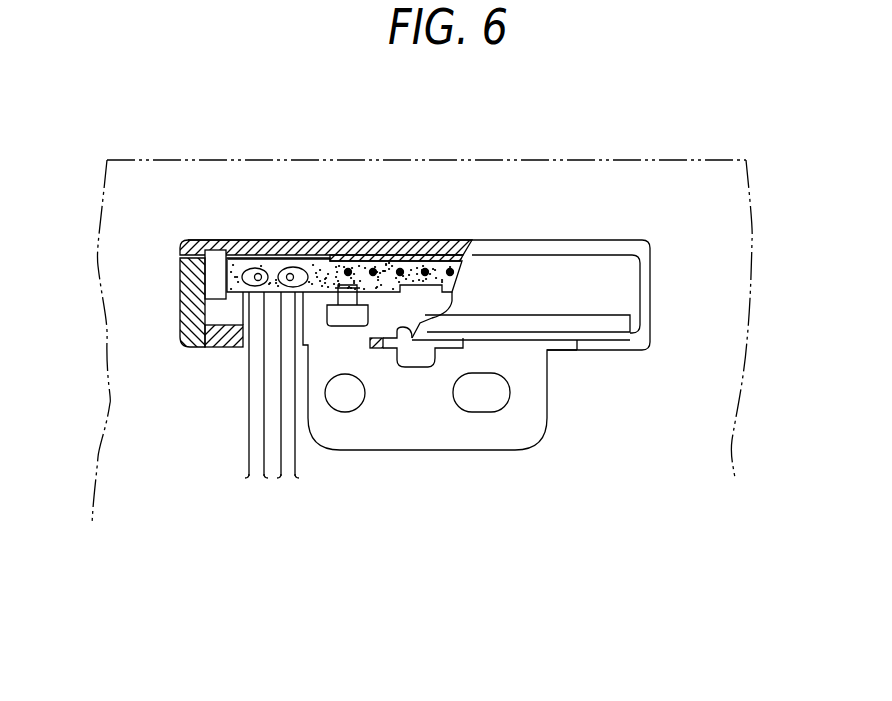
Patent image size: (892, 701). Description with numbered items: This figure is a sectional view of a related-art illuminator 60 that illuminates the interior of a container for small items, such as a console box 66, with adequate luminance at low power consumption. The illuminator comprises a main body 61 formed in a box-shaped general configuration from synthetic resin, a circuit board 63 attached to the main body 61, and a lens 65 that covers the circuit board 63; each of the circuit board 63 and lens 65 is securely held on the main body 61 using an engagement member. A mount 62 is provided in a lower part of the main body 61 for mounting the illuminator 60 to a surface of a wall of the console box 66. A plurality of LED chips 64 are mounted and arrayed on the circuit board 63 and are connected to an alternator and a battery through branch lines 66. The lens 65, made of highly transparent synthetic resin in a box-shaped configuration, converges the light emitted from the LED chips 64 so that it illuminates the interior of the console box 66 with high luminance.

The illuminator 60 is at (645, 237).
The main body 61 is at (193, 347).
The mount 62 is at (528, 406).
The circuit board 63 is at (266, 263).
The LED chips 64 is at (450, 268).
The lens 65 is at (543, 270).
The console box 66 is at (548, 160).